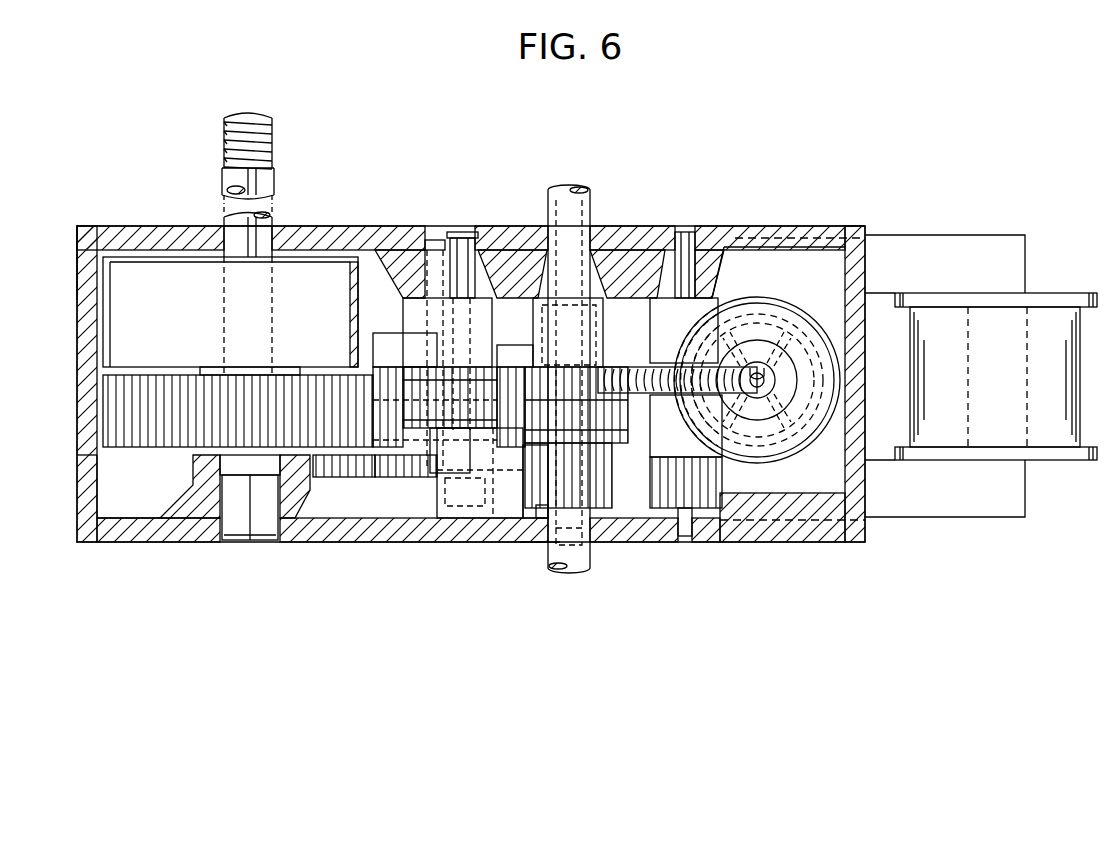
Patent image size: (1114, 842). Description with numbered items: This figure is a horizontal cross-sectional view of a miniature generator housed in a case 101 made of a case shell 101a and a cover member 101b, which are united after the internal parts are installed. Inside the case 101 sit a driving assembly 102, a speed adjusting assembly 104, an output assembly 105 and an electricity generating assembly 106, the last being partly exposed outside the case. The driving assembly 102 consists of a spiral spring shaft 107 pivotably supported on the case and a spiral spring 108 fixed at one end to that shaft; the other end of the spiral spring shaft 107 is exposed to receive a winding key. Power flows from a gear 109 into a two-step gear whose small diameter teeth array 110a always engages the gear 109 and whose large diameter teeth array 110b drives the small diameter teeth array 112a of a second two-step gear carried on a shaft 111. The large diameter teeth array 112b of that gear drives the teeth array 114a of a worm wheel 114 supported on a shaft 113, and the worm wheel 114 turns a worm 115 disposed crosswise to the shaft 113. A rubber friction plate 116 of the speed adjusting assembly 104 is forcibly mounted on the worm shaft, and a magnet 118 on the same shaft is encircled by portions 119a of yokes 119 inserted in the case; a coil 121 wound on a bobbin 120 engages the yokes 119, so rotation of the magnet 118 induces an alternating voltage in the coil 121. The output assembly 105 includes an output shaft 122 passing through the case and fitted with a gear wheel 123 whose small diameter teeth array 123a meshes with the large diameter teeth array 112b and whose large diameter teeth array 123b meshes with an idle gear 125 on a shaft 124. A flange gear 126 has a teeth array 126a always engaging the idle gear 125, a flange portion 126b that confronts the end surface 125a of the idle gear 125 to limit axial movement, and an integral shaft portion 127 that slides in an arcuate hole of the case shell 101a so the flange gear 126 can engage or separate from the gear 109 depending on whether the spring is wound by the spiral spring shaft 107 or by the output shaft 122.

The case 101 is at (76, 367).
The case shell 101a is at (84, 245).
The cover member 101b is at (88, 522).
The driving assembly 102 is at (136, 213).
The speed adjusting assembly 104 is at (798, 474).
The output assembly 105 is at (518, 550).
The electricity generating assembly 106 is at (882, 206).
The spiral spring shaft 107 is at (232, 228).
The spiral spring 108 is at (352, 258).
The gear 109 is at (160, 430).
The small diameter teeth array 110a is at (418, 444).
The large diameter teeth array 110b is at (323, 468).
The shaft 111 is at (592, 246).
The small diameter teeth array 112a is at (512, 540).
The large diameter teeth array 112b is at (632, 496).
The shaft 113 is at (685, 234).
The worm wheel 114 is at (668, 358).
The teeth array 114a is at (679, 496).
The worm 115 is at (758, 394).
The friction plate 116 is at (793, 328).
The magnet 118 is at (760, 314).
The yokes 119 is at (900, 250).
The portions 119a is at (750, 256).
The bobbin 120 is at (1040, 296).
The coil 121 is at (1042, 428).
The output shaft 122 is at (586, 192).
The gear wheel 123 is at (604, 308).
The small diameter teeth array 123a is at (539, 512).
The large diameter teeth array 123b is at (662, 400).
The shaft 124 is at (458, 246).
The idle gear 125 is at (494, 376).
The end surface 125a is at (470, 364).
The flange gear 126 is at (364, 354).
The teeth array 126a is at (372, 372).
The flange portion 126b is at (388, 342).
The shaft portion 127 is at (434, 246).